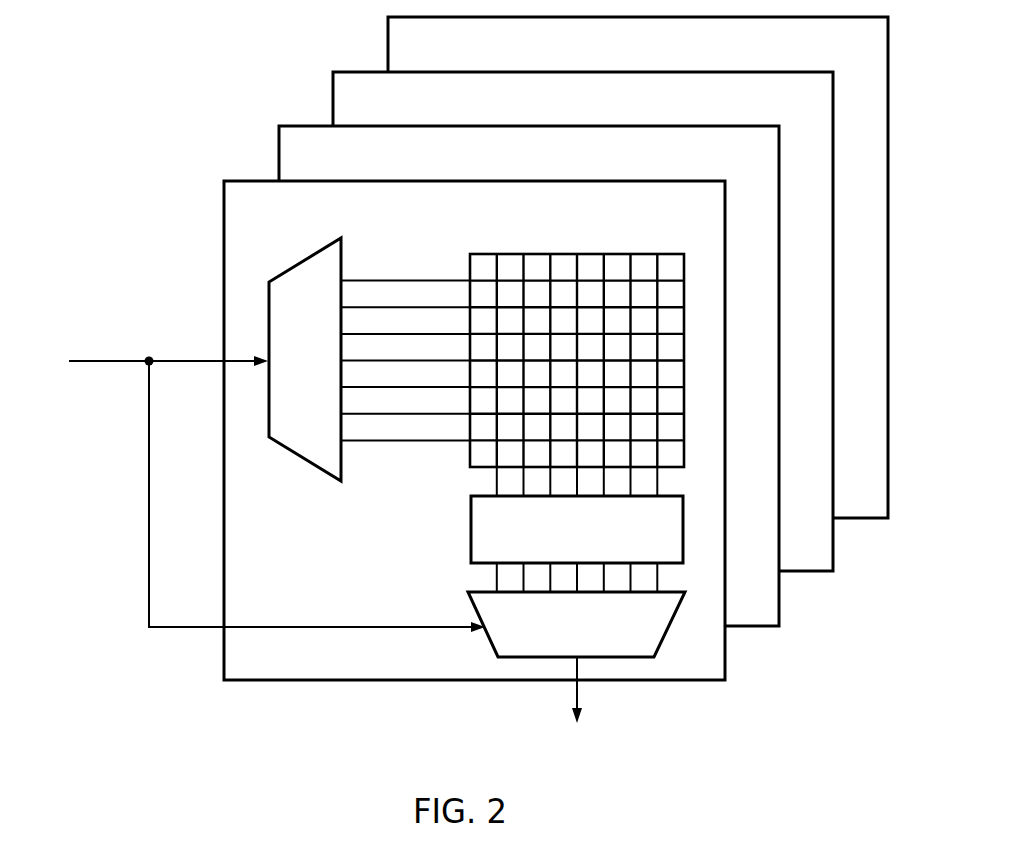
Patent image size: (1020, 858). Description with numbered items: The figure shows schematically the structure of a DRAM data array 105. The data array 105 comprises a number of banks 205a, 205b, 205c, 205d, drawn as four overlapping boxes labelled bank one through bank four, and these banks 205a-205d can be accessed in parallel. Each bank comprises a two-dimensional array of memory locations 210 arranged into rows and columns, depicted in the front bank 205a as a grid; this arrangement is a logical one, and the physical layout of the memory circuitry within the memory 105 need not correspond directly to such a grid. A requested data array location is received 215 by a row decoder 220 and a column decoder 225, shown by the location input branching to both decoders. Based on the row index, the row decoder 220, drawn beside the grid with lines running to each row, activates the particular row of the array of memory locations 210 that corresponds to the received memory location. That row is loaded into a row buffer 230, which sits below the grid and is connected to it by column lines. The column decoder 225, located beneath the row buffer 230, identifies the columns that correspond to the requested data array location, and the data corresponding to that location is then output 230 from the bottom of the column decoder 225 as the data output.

The DRAM data array 105 is at (140, 47).
The bank 205a is at (570, 220).
The bank 205b is at (623, 165).
The bank 205c is at (678, 112).
The bank 205d is at (732, 57).
The array of memory locations 210 is at (646, 253).
The requested data array location 215 is at (258, 477).
The row decoder 220 is at (325, 383).
The column decoder 225 is at (602, 653).
The row buffer 230 is at (602, 555).